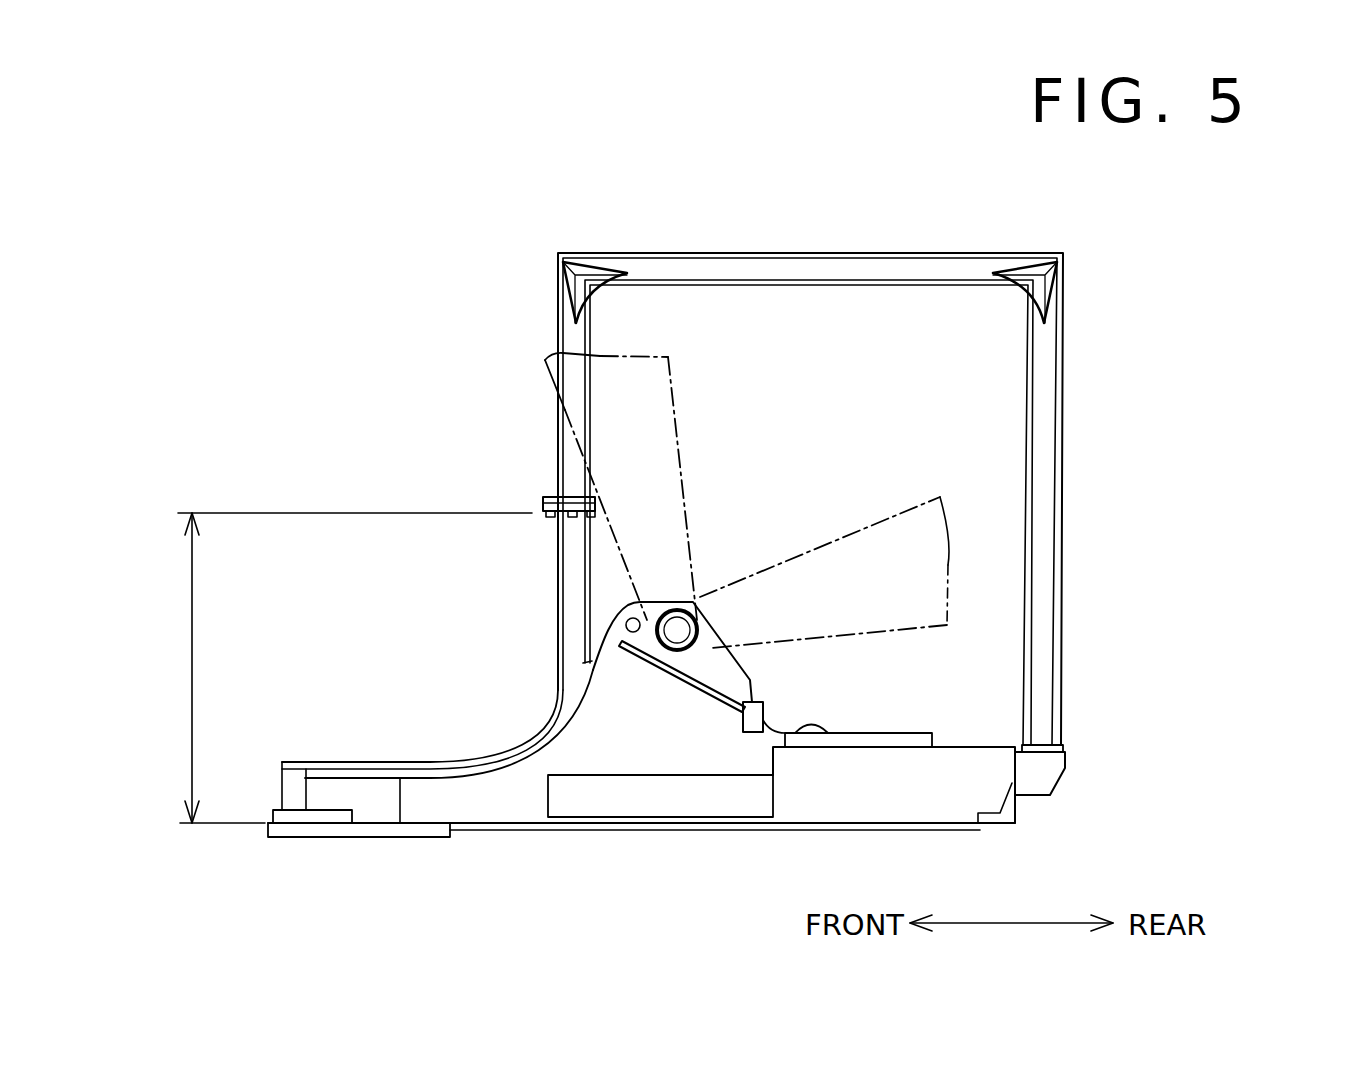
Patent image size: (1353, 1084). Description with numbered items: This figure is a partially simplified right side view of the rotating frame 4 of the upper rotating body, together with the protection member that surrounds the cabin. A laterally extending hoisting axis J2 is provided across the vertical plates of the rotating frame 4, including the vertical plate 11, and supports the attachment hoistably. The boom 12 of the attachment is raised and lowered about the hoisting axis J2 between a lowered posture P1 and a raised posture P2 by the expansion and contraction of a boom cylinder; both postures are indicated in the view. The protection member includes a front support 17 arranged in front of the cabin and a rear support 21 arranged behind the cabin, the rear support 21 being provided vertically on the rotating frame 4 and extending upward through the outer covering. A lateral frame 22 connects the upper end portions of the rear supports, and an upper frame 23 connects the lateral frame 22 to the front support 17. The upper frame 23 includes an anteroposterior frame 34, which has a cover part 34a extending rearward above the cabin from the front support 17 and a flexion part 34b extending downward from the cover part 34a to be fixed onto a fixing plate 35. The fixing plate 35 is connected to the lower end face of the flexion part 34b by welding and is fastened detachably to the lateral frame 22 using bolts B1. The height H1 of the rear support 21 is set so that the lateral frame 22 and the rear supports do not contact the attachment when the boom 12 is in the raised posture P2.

The rotating frame 4 is at (638, 828).
The vertical plate 11 is at (682, 702).
The boom 12 is at (747, 500).
The lowered posture P1 is at (857, 527).
The raised posture P2 is at (672, 380).
The front support 17 is at (1045, 500).
The rear support 21 is at (575, 627).
The lateral frame 22 is at (548, 510).
The upper frame 23 is at (862, 462).
The anteroposterior frame 34 is at (594, 253).
The cover part 34a is at (650, 267).
The flexion part 34b is at (572, 340).
The fixing plate 35 is at (525, 525).
The bolts B1 is at (590, 519).
The hoisting axis J2 is at (652, 634).
The height H1 is at (337, 668).